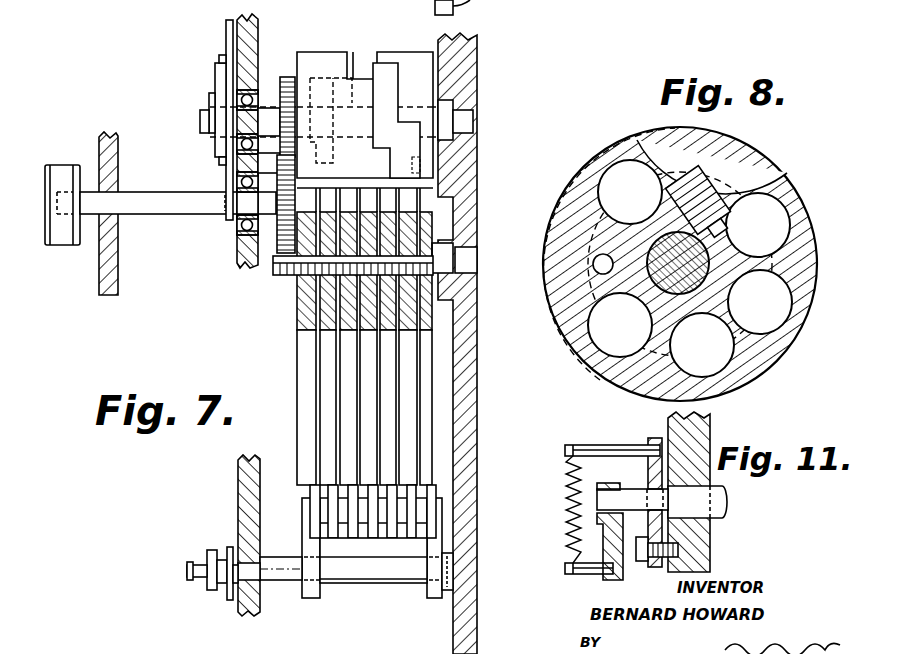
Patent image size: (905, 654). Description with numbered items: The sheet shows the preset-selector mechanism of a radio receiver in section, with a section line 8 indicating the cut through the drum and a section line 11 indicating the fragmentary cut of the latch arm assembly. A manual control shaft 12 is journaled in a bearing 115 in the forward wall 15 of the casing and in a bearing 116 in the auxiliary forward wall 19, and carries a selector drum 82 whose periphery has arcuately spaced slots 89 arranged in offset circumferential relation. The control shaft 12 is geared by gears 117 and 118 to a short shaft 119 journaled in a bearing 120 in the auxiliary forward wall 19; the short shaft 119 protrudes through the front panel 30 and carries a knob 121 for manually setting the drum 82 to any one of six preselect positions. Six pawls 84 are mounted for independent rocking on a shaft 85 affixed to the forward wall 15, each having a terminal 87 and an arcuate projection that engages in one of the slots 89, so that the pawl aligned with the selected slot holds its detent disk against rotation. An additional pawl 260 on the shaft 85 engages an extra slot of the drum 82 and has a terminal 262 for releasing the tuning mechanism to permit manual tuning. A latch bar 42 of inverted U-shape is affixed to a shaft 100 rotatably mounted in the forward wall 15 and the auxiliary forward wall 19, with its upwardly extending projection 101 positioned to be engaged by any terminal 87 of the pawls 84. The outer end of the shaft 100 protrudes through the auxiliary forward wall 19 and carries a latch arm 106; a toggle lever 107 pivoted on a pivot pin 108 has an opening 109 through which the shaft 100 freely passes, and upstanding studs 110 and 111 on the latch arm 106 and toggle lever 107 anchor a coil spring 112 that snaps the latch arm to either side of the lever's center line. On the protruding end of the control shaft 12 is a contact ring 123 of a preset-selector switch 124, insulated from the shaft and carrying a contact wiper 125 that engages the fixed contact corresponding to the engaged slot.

In FIG. 7, the section line 8— 8 is at (363, 27).
In FIG. 7, the shaft 11 is at (169, 570).
In FIG. 7, the manual control shaft 12 is at (201, 119).
In FIG. 8, the manual control shaft 12 is at (665, 248).
In FIG. 7, the forward wall 15 is at (477, 180).
In FIG. 7, the auxiliary forward wall 19 is at (245, 262).
In FIG. 11, the auxiliary forward wall 19 is at (705, 535).
In FIG. 7, the front panel 30 is at (105, 290).
In FIG. 7, the latch bar 42 is at (305, 600).
In FIG. 7, the selector drum 82 is at (362, 58).
In FIG. 8, the selector drum 82 is at (803, 196).
In FIG. 7, the pawls 84 is at (297, 372).
In FIG. 7, the shaft 85 is at (330, 272).
In FIG. 7, the terminal 87 is at (312, 490).
In FIG. 7, the slots 89 is at (361, 60).
In FIG. 8, the slots 89 is at (600, 182).
In FIG. 7, the shaft 100 is at (400, 575).
In FIG. 11, the shaft 100 is at (722, 500).
In FIG. 7, the upwardly extending projection 101 is at (345, 540).
In FIG. 7, the latch arm 106 is at (212, 550).
In FIG. 11, the latch arm 106 is at (600, 574).
In FIG. 7, the toggle lever 107 is at (225, 590).
In FIG. 11, the toggle lever 107 is at (650, 567).
In FIG. 11, the pivot pin 108 is at (680, 550).
In FIG. 11, the opening 109 is at (648, 483).
In FIG. 11, the stud 110 is at (605, 448).
In FIG. 11, the stud 111 is at (568, 568).
In FIG. 11, the coil spring 112 is at (568, 505).
In FIG. 7, the bearing 115 is at (447, 105).
In FIG. 7, the bearing 116 is at (240, 148).
In FIG. 7, the gear 117 is at (284, 77).
In FIG. 7, the gear 118 is at (296, 184).
In FIG. 7, the short shaft 119 is at (165, 192).
In FIG. 7, the bearing 120 is at (238, 228).
In FIG. 7, the knob 121 is at (65, 165).
In FIG. 7, the contact ring 123 is at (208, 110).
In FIG. 7, the preset-selector switch 124 is at (211, 85).
In FIG. 7, the contact wiper 125 is at (222, 104).
In FIG. 7, the additional pawl 260 is at (425, 358).
In FIG. 7, the terminal 262 is at (430, 492).